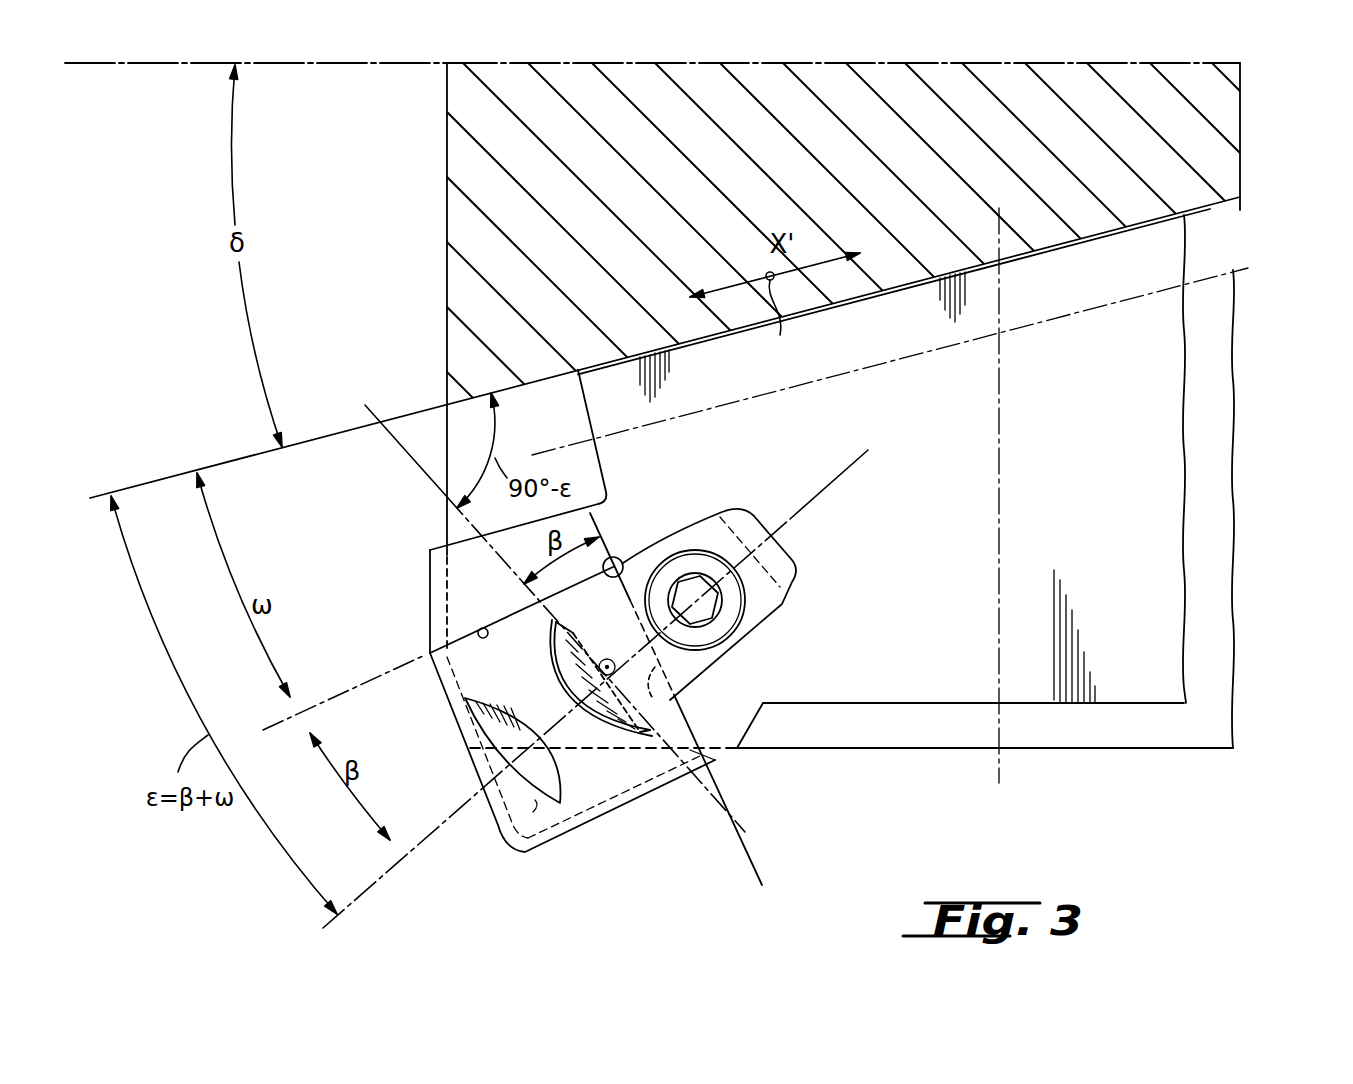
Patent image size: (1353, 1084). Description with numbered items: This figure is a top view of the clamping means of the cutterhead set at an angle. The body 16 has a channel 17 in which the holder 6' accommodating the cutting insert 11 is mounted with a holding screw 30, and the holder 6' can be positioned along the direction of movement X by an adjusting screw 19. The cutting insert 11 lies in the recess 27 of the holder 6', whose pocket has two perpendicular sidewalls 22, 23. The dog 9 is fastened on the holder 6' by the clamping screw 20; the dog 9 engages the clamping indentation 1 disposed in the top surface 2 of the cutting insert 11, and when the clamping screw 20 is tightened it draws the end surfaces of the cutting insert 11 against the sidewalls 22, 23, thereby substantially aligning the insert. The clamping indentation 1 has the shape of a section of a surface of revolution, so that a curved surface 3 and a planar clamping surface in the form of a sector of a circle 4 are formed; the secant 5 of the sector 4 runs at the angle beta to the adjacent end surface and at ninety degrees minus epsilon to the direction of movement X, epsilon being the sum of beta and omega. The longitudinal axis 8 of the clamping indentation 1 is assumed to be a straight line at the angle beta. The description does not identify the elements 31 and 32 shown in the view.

The clamping indentation 1 is at (508, 730).
The top surface 2 is at (510, 842).
The curved surface 3 is at (507, 715).
The sector of a circle 4 is at (545, 773).
The secant 5 is at (533, 812).
The holder 6' is at (825, 714).
The longitudinal axis of the clamping indentation 8 is at (693, 818).
The dog 9 is at (760, 598).
The cutting insert 11 is at (567, 838).
The body 16 is at (445, 135).
The channel 17 is at (1187, 702).
The adjusting screw 19 is at (561, 448).
The clamping screw 20 is at (691, 585).
The sidewall 22 is at (480, 628).
The sidewall 23 is at (680, 703).
The recess 27 is at (620, 562).
The holding screw 30 is at (1000, 768).
The horizontal reference line 31 is at (103, 68).
The inclined bearing surface 32 is at (1226, 204).